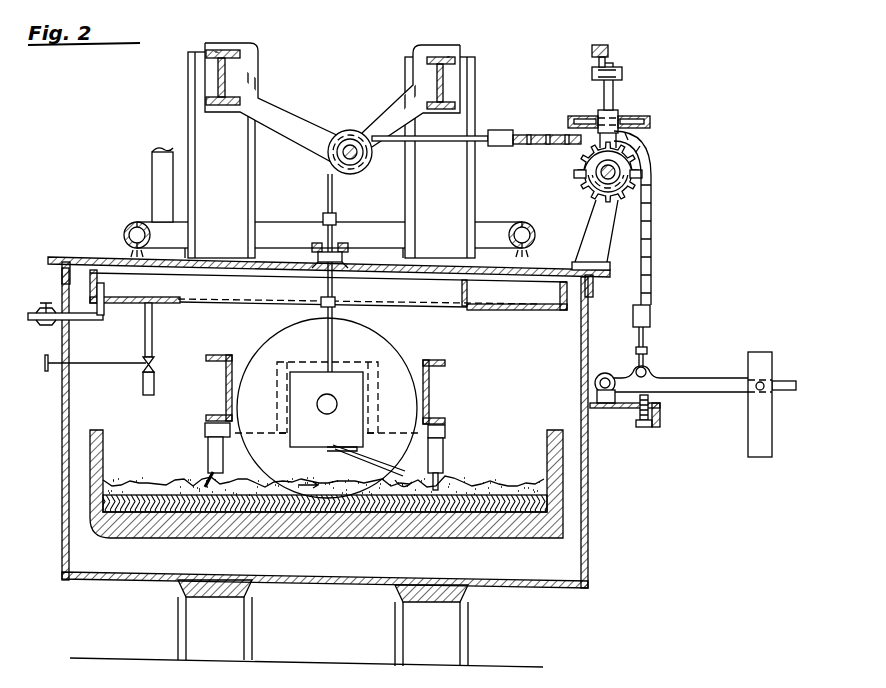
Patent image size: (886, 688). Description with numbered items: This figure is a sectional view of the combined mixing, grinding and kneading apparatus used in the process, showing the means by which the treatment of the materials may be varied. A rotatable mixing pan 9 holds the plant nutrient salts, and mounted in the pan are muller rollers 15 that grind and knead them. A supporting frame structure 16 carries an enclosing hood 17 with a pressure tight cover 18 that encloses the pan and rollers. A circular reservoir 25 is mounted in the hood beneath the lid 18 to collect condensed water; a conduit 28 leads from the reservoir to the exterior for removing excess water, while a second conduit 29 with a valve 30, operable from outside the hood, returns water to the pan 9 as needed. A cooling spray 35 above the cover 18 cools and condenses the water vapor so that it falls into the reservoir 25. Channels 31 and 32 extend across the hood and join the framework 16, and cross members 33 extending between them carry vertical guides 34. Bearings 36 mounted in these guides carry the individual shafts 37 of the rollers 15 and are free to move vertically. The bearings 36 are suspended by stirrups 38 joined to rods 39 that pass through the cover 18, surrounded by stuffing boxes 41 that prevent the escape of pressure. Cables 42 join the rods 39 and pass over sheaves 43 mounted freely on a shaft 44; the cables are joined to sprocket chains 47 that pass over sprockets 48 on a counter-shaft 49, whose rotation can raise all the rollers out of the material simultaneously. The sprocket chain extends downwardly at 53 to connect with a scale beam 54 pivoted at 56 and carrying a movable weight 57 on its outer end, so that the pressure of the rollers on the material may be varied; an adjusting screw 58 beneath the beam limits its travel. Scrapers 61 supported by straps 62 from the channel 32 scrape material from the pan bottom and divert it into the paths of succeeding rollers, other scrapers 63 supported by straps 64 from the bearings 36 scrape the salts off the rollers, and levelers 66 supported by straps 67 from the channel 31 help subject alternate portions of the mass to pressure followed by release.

The rotatable mixing pan 9 is at (185, 522).
The muller rollers 15 is at (388, 345).
The supporting frame structure 16 is at (188, 90).
The enclosing hood 17 is at (62, 568).
The pressure tight cover 18 is at (88, 258).
The circular reservoir 25 is at (180, 297).
The conduit 28 is at (56, 325).
The second conduit 29 is at (145, 340).
The valve 30 is at (142, 366).
The channel 31 is at (226, 388).
The channel 32 is at (429, 395).
The cross members 33 is at (246, 338).
The vertical guides 34 is at (282, 360).
The cooling spray 35 is at (135, 222).
The bearings 36 is at (296, 445).
The shafts 37 is at (327, 397).
The stirrups 38 is at (332, 350).
The rods 39 is at (336, 235).
The stuffing boxes 41 is at (312, 248).
The cables 42 is at (328, 187).
The sheaves 43 is at (337, 153).
The shaft 44 is at (352, 132).
The sprocket chains 47 is at (530, 135).
The sprockets 48 is at (578, 178).
The counter-shaft 49 is at (608, 172).
The downward extension of sprocket chain 53 is at (651, 249).
The scale beam 54 is at (675, 378).
The pivot 56 is at (600, 378).
The movable weight 57 is at (748, 420).
The adjusting screw 58 is at (648, 427).
The scrapers 61 is at (450, 485).
The straps 62 is at (445, 432).
The scrapers 63 is at (383, 495).
The straps 64 is at (360, 457).
The levelers 66 is at (205, 480).
The straps 67 is at (206, 448).